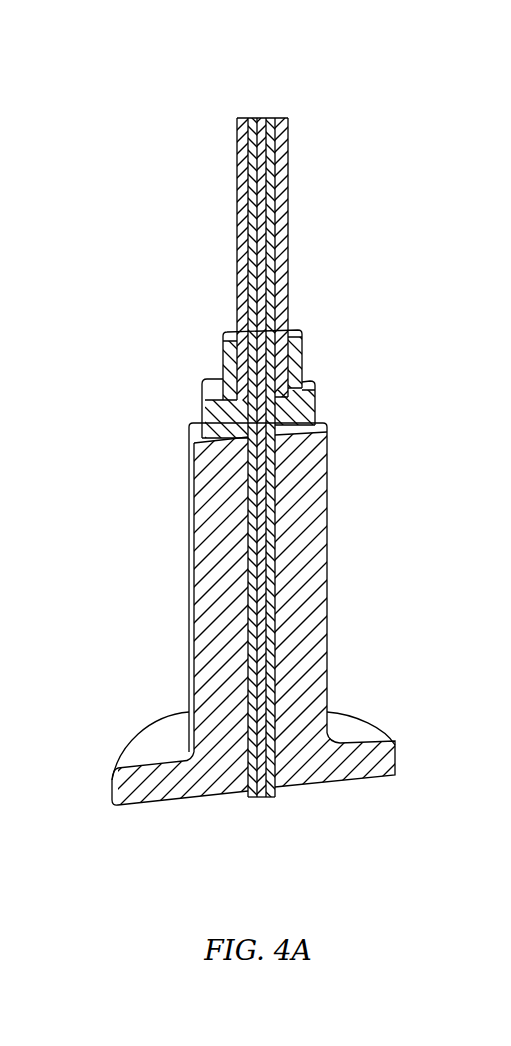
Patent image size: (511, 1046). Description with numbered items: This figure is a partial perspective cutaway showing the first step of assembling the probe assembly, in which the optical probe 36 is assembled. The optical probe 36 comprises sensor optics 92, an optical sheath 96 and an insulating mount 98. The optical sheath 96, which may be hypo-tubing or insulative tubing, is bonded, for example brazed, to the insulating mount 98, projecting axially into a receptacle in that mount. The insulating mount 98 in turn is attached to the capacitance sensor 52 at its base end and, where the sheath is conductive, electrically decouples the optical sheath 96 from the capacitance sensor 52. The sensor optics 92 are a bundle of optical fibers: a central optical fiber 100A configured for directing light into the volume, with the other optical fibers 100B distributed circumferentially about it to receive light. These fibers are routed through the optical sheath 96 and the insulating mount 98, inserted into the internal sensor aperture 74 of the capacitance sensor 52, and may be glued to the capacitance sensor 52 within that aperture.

The optical probe 36 is at (273, 812).
The capacitance sensor 52 is at (168, 812).
The sensor aperture 74 is at (272, 572).
The sensor optics 92 is at (248, 810).
The optical sheath 96 is at (288, 257).
The insulating mount 98 is at (302, 365).
The optical fiber 100A is at (258, 118).
The optical fibers 100B is at (287, 128).